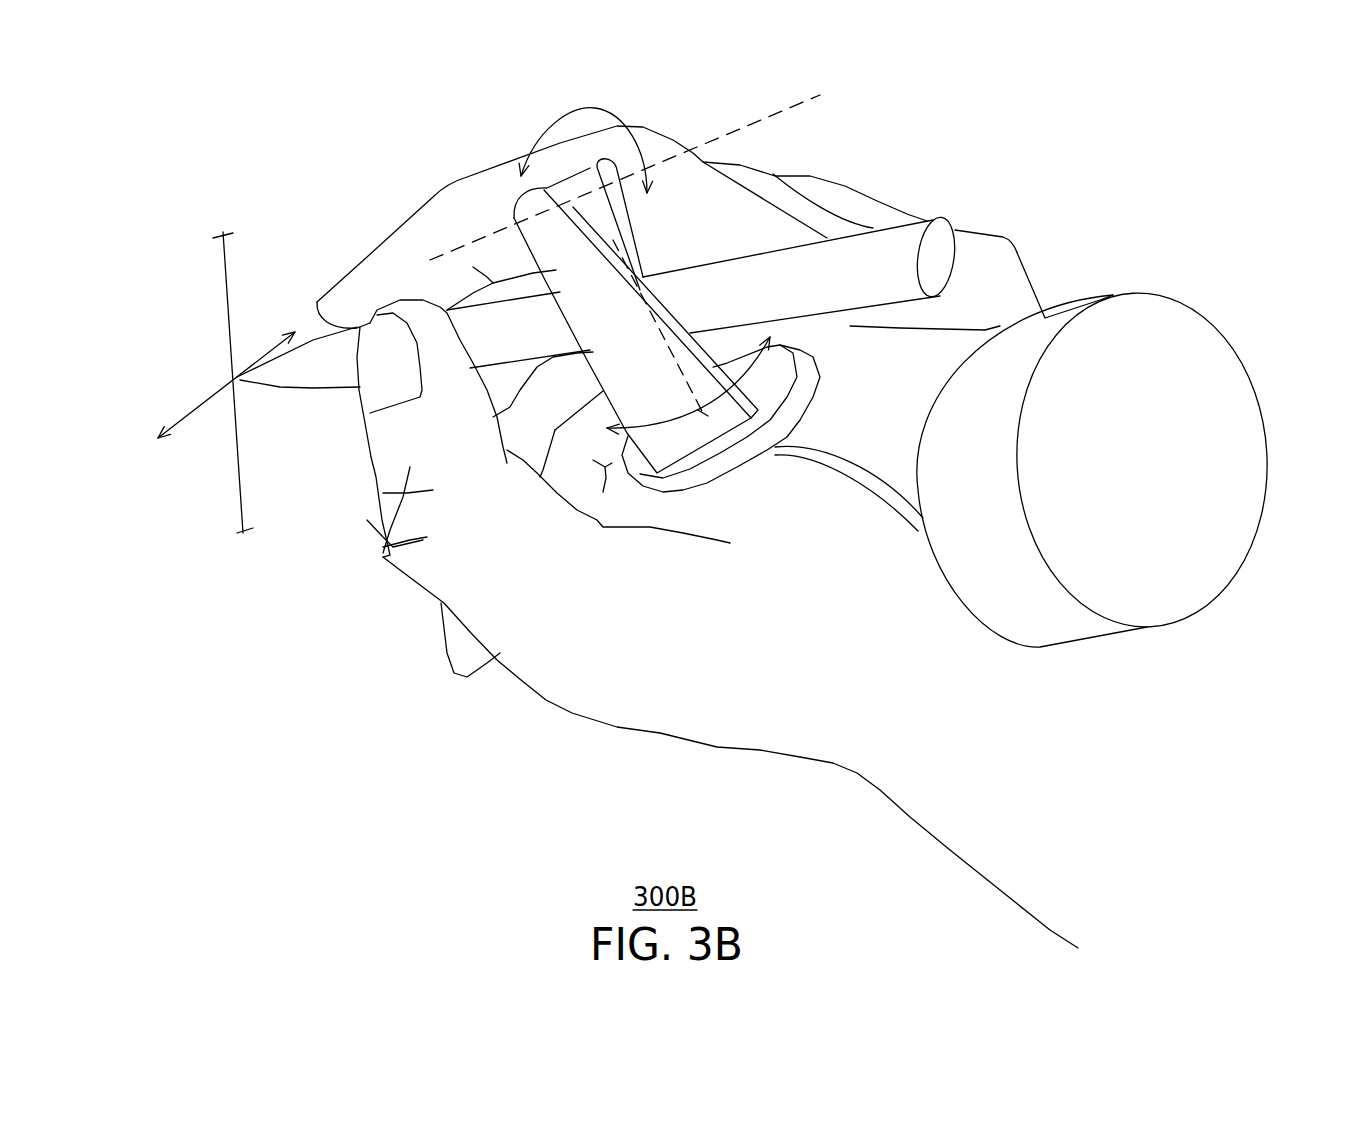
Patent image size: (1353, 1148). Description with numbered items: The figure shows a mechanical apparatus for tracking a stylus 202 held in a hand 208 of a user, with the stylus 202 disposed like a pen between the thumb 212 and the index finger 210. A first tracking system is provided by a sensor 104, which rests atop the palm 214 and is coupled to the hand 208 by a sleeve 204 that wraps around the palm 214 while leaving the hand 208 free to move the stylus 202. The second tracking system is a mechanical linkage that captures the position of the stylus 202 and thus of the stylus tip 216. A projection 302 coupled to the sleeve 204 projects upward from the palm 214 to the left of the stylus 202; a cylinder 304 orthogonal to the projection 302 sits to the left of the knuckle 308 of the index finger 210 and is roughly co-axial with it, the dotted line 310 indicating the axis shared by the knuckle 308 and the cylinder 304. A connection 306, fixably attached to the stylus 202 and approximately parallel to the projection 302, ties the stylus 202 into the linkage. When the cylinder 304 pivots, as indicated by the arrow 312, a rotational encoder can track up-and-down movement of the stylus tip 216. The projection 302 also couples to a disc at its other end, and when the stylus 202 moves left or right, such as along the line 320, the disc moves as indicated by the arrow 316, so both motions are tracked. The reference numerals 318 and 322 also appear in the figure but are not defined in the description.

The sensor 104 is at (1167, 402).
The stylus 202 is at (873, 262).
The sleeve 204 is at (833, 400).
The hand 208 is at (660, 730).
The index finger 210 is at (362, 274).
The thumb 212 is at (395, 533).
The palm 214 is at (650, 527).
The stylus tip 216 is at (240, 380).
The projection 302 is at (615, 309).
The cylinder 304 is at (612, 207).
The connection 306 is at (647, 250).
The knuckle 308 is at (633, 127).
The dotted line 310 is at (760, 117).
The arrow 312 is at (573, 110).
The arrow 316 is at (677, 417).
The clip axis 318 is at (652, 323).
The line 320 is at (187, 412).
The axis 322 is at (227, 300).